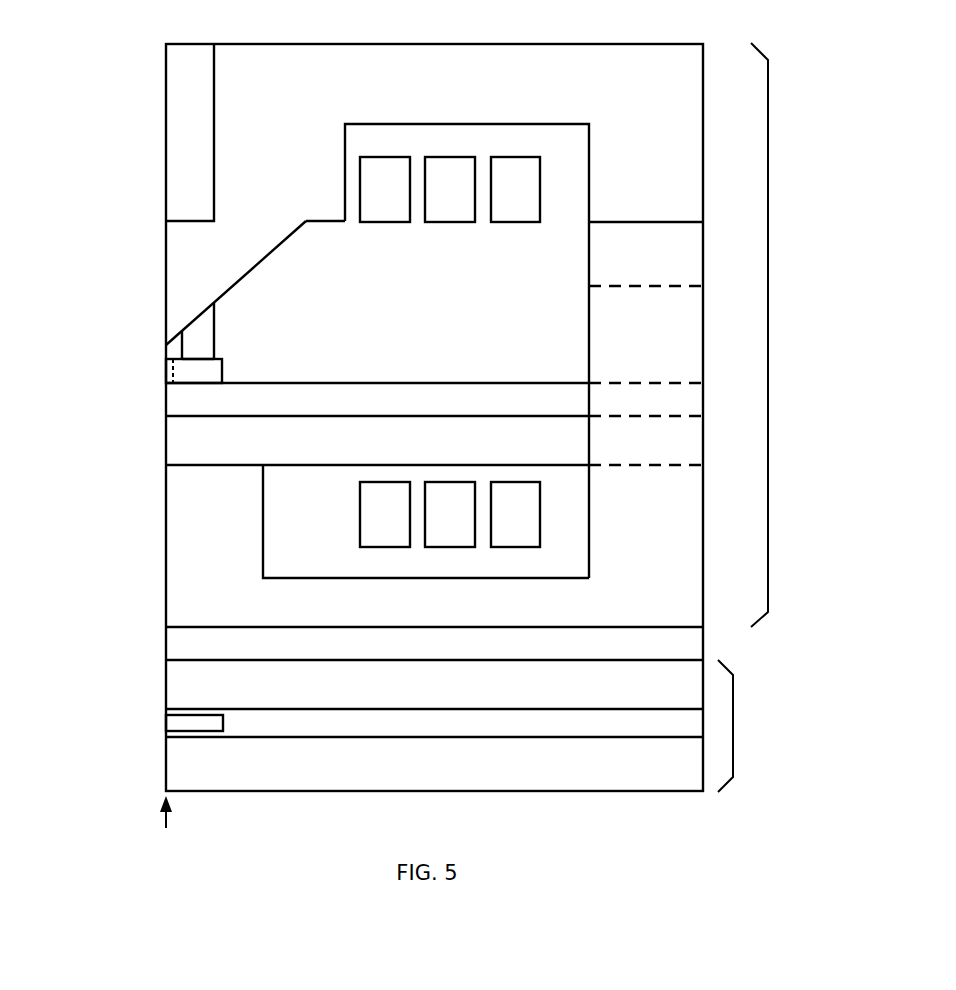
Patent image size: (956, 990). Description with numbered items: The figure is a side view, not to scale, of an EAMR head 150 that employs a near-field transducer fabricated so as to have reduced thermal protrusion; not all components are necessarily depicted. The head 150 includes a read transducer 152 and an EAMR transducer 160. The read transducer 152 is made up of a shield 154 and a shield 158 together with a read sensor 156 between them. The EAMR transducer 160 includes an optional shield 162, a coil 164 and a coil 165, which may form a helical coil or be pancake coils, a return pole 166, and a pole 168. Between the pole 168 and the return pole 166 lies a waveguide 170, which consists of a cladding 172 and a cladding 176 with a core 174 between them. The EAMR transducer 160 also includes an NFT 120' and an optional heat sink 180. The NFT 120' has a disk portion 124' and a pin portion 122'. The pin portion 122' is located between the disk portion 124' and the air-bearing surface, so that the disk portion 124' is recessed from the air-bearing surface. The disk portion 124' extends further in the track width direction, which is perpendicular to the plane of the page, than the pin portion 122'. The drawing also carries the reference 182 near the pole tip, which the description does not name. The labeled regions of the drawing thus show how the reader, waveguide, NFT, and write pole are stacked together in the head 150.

The head 150 is at (85, 53).
The read transducer 152 is at (733, 725).
The shield 154 is at (166, 765).
The read sensor 156 is at (202, 731).
The shield 158 is at (589, 709).
The EAMR transducer 160 is at (768, 335).
The shield 162 is at (703, 643).
The coil 164 is at (557, 517).
The coil 165 is at (557, 185).
The return pole 166 is at (166, 595).
The pole 168 is at (703, 124).
The waveguide 170 is at (787, 385).
The cladding 172 is at (166, 458).
The core 174 is at (703, 408).
The cladding 176 is at (703, 360).
The heat sink 180 is at (197, 316).
The pole tip surface 182 is at (198, 300).
The NFT 120' is at (118, 395).
The pin portion 122' is at (117, 352).
The disk portion 124' is at (147, 395).